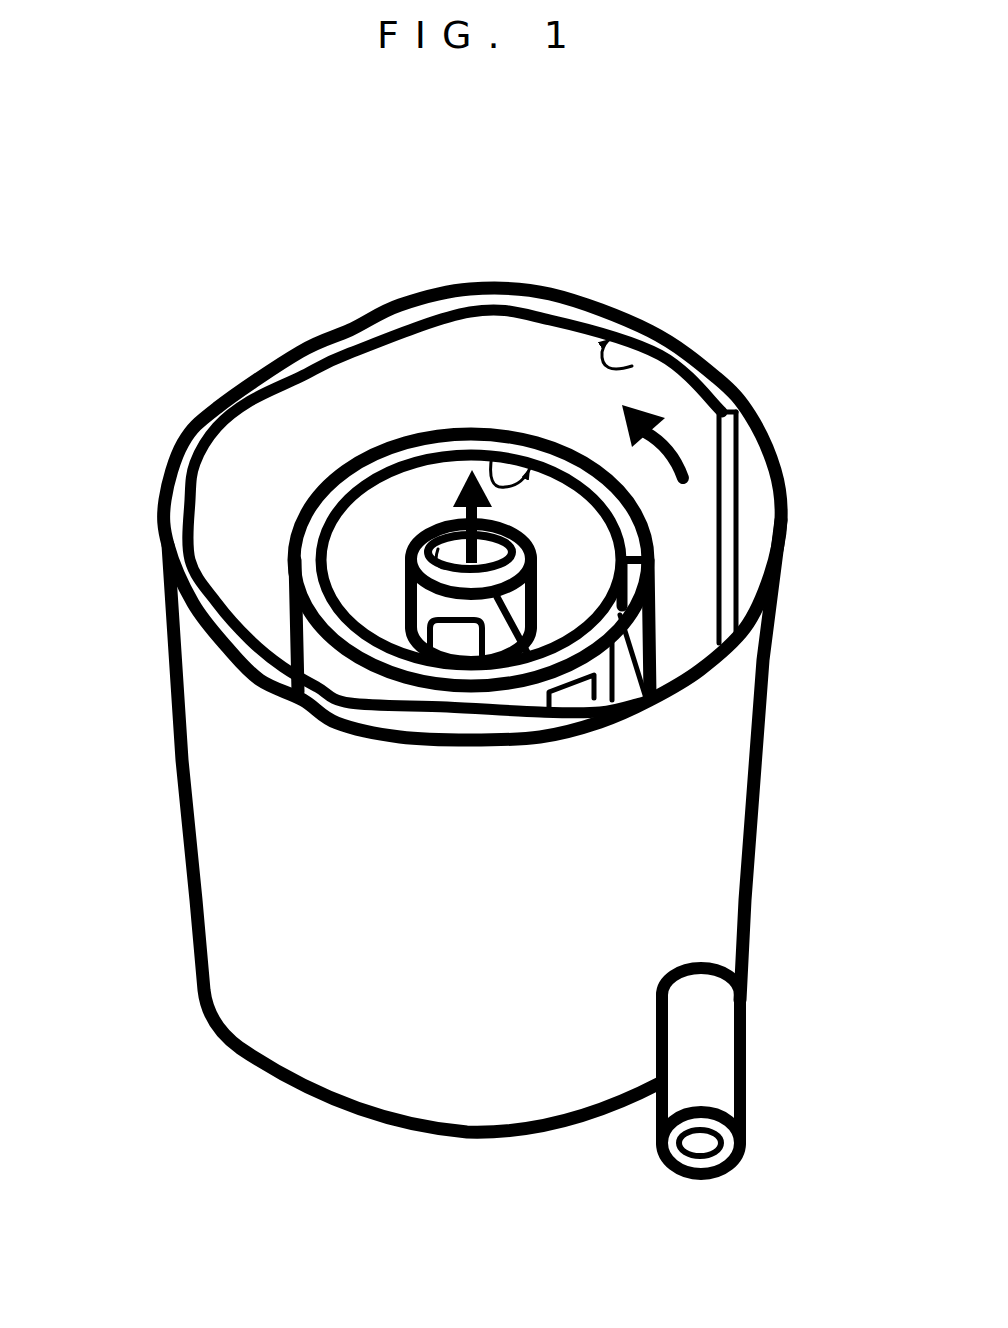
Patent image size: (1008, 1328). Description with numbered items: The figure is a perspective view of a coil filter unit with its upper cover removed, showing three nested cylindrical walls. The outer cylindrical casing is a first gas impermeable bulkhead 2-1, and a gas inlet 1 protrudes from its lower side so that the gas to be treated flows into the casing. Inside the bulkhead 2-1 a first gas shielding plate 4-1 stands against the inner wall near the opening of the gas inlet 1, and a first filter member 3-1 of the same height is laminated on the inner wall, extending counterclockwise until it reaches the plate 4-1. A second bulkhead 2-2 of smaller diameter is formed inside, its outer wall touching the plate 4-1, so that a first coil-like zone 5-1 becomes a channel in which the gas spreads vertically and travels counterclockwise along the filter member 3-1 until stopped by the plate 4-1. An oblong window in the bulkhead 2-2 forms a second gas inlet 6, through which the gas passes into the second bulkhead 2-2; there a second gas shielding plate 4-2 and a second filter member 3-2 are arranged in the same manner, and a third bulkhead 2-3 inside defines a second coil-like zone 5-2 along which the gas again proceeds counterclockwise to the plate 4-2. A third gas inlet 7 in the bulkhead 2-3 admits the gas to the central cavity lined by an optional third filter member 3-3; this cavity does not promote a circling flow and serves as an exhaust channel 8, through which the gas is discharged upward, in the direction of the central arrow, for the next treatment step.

The gas inlet 1 is at (702, 1143).
The first gas impermeable bulkhead 2-1 is at (776, 430).
The second bulkhead 2-2 is at (656, 523).
The third bulkhead 2-3 is at (440, 515).
The first filter member 3-1 is at (615, 352).
The second filter member 3-2 is at (492, 455).
The third filter member 3-3 is at (447, 562).
The first gas shielding plate 4-1 is at (628, 640).
The second gas shielding plate 4-2 is at (522, 606).
The first coil-like zone 5-1 is at (262, 485).
The second coil-like zone 5-2 is at (365, 561).
The second gas inlet 6 is at (582, 701).
The third gas inlet 7 is at (458, 642).
The exhaust channel 8 is at (466, 572).